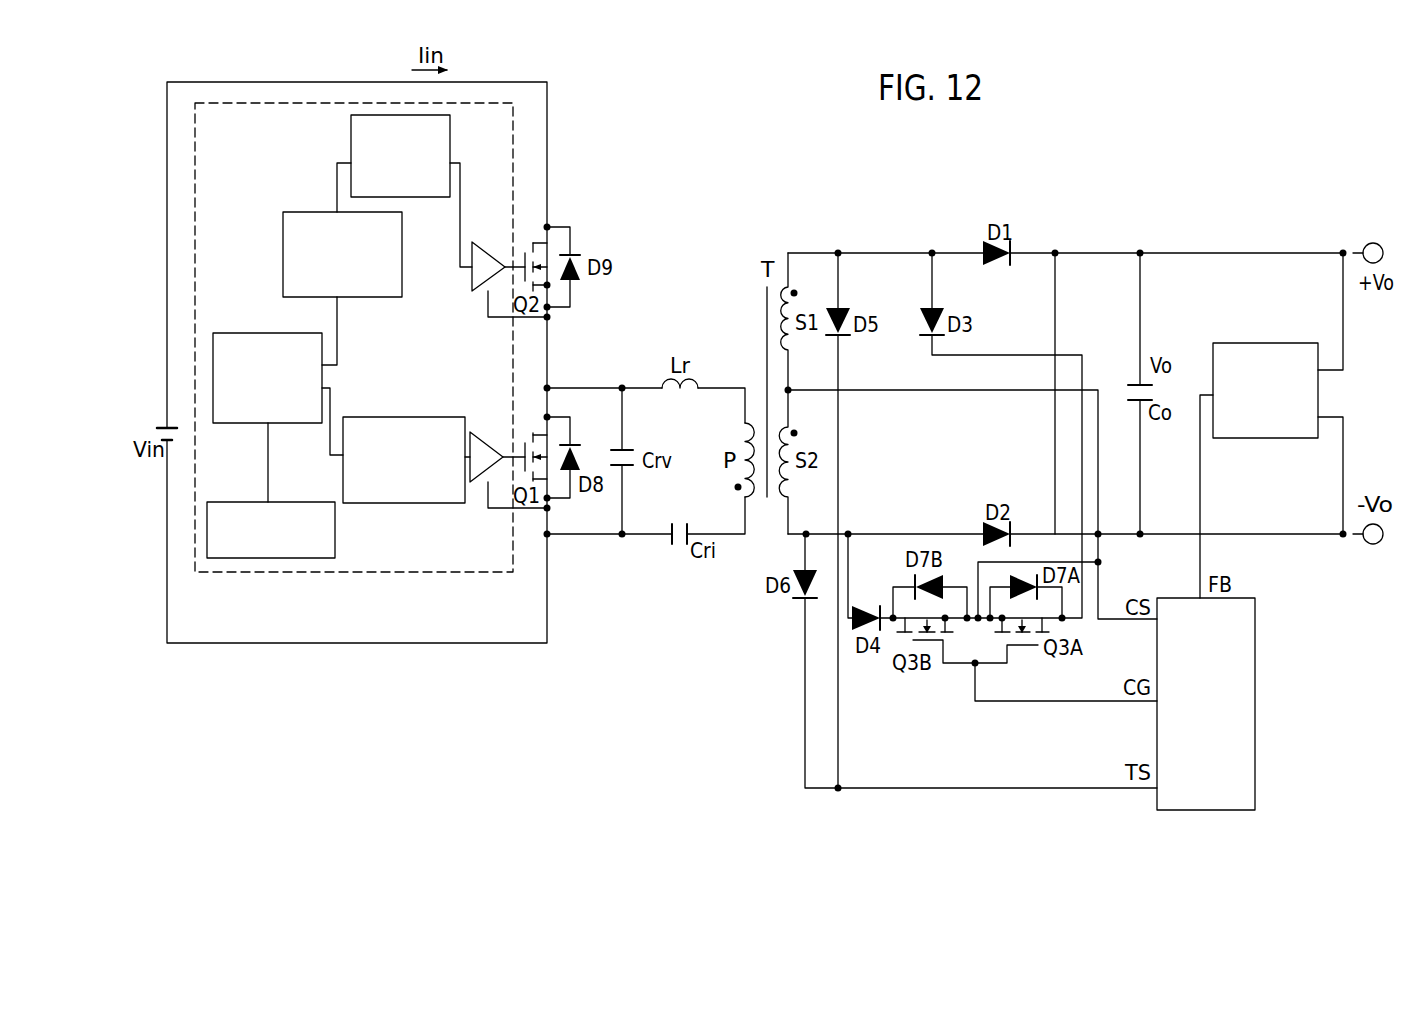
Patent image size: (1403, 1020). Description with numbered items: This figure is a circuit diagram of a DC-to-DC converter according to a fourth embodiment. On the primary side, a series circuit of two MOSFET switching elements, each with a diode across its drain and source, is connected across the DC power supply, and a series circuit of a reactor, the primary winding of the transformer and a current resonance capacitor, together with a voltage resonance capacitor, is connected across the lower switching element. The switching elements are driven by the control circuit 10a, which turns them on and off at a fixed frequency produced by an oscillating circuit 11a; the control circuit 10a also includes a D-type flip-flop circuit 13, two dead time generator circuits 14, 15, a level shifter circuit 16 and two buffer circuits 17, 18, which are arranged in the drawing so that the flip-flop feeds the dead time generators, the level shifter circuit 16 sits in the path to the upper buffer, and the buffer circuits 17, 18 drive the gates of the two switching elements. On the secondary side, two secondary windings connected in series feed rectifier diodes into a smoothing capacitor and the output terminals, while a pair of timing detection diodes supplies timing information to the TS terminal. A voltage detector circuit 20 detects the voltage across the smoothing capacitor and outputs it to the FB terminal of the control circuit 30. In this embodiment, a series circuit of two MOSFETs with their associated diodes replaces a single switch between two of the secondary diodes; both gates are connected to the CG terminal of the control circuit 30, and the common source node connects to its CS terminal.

The control circuit 10a is at (447, 572).
The oscillating circuit 11a is at (243, 502).
The D-type flip-flop circuit 13 is at (235, 333).
The dead time generator circuit 14 is at (405, 417).
The dead time generator circuit 15 is at (283, 232).
The level shifter circuit 16 is at (430, 197).
The buffer circuit 17 is at (482, 432).
The buffer circuit 18 is at (472, 288).
The voltage detector circuit 20 is at (1297, 343).
The control circuit 30 is at (1255, 648).